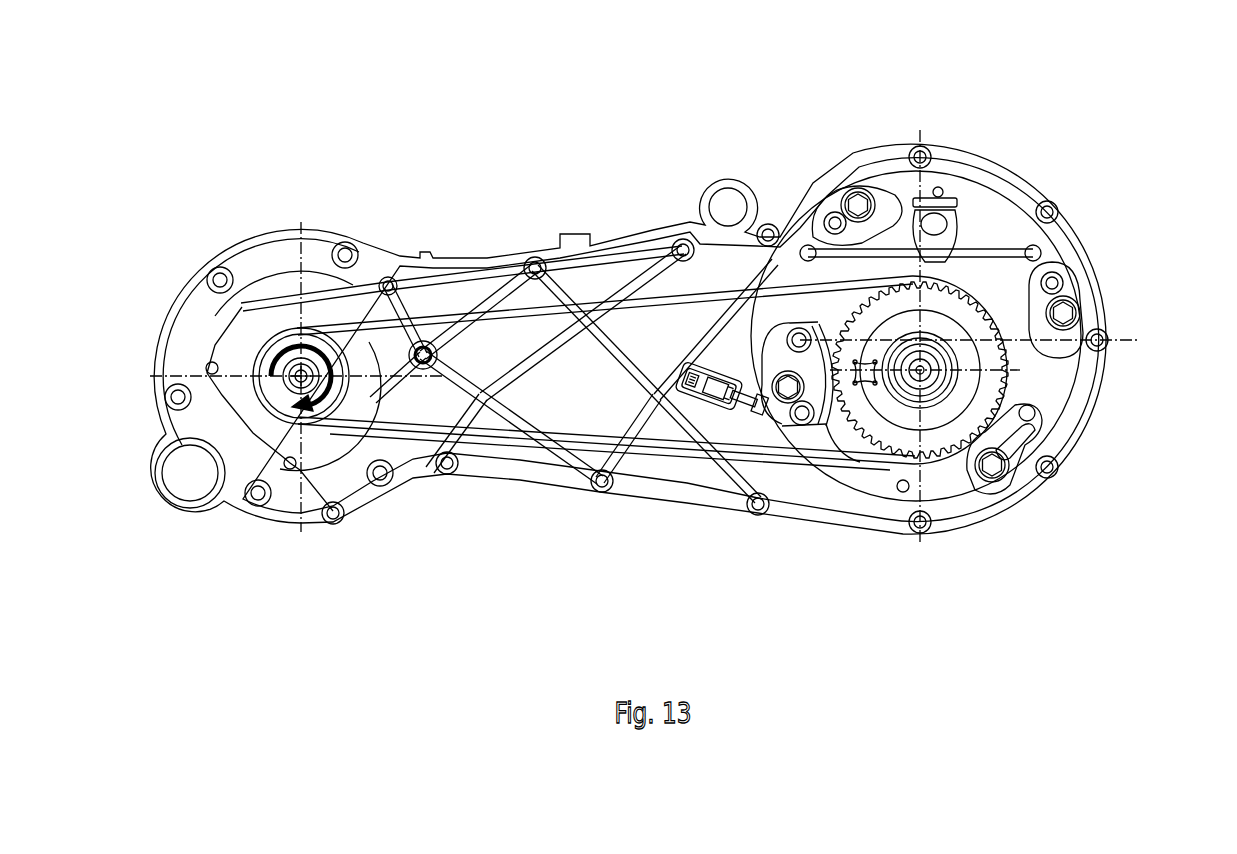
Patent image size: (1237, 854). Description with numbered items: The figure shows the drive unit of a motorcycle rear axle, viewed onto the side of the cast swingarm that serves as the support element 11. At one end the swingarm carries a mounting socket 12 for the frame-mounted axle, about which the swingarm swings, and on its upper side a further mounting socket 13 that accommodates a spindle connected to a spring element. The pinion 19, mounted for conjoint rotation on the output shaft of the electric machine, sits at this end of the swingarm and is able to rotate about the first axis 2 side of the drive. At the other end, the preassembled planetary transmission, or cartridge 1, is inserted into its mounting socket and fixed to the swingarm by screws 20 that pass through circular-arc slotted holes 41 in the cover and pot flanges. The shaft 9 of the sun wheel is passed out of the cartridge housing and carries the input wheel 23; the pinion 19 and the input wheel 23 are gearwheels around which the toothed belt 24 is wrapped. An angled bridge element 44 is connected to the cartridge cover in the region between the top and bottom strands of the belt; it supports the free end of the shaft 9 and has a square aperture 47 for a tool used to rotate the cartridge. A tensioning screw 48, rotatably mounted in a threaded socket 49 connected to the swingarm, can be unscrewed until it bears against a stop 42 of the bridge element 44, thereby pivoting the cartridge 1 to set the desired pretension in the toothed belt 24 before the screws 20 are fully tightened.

The planetary transmission 1 is at (1057, 248).
The first axis 2 is at (932, 363).
The shaft 9 is at (992, 465).
The support element 11 is at (945, 141).
The mounting socket 12 is at (192, 485).
The further mounting socket 13 is at (727, 200).
The pinion 19 is at (323, 408).
The screws 20 is at (858, 205).
The input wheel 23 is at (995, 386).
The toothed belt 24 is at (505, 317).
The slotted holes 41 is at (835, 223).
The stop 42 is at (765, 405).
The bridge element 44 is at (833, 348).
The square aperture 47 is at (865, 378).
The tensioning screw 48 is at (745, 397).
The socket 49 is at (715, 393).